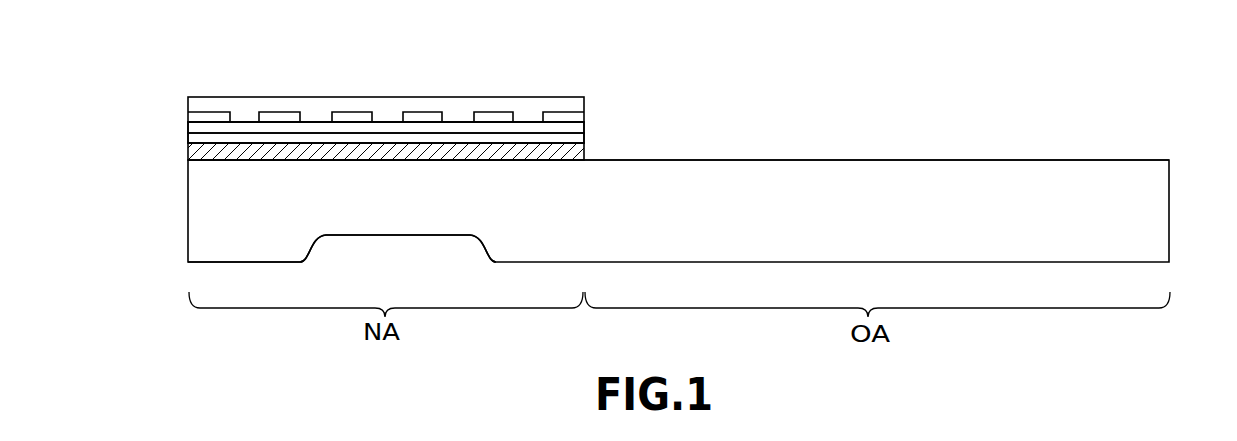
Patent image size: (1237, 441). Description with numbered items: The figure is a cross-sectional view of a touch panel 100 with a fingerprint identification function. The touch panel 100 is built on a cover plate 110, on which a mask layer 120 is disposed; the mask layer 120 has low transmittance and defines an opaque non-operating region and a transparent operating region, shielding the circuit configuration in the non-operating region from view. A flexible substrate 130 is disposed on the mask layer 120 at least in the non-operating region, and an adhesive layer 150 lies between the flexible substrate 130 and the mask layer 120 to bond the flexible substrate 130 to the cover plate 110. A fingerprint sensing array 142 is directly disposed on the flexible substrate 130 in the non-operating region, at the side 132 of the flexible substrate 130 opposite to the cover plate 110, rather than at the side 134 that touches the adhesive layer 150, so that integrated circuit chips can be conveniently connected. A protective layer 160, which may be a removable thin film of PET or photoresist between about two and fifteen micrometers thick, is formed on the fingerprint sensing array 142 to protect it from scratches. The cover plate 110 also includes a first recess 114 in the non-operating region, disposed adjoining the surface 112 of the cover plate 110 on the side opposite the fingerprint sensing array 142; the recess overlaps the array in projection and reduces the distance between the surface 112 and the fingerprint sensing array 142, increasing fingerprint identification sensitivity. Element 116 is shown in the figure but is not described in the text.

The touch panel 100 is at (182, 34).
The cover plate 110 is at (189, 219).
The surface 112 is at (205, 262).
The first recess 114 is at (402, 256).
The top surface of substrate 116 is at (769, 159).
The mask layer 120 is at (187, 161).
The flexible substrate 130 is at (188, 128).
The side 132 is at (528, 120).
The side 134 is at (558, 138).
The fingerprint sensing array 142 is at (420, 115).
The adhesive layer 150 is at (189, 143).
The protective layer 160 is at (187, 103).